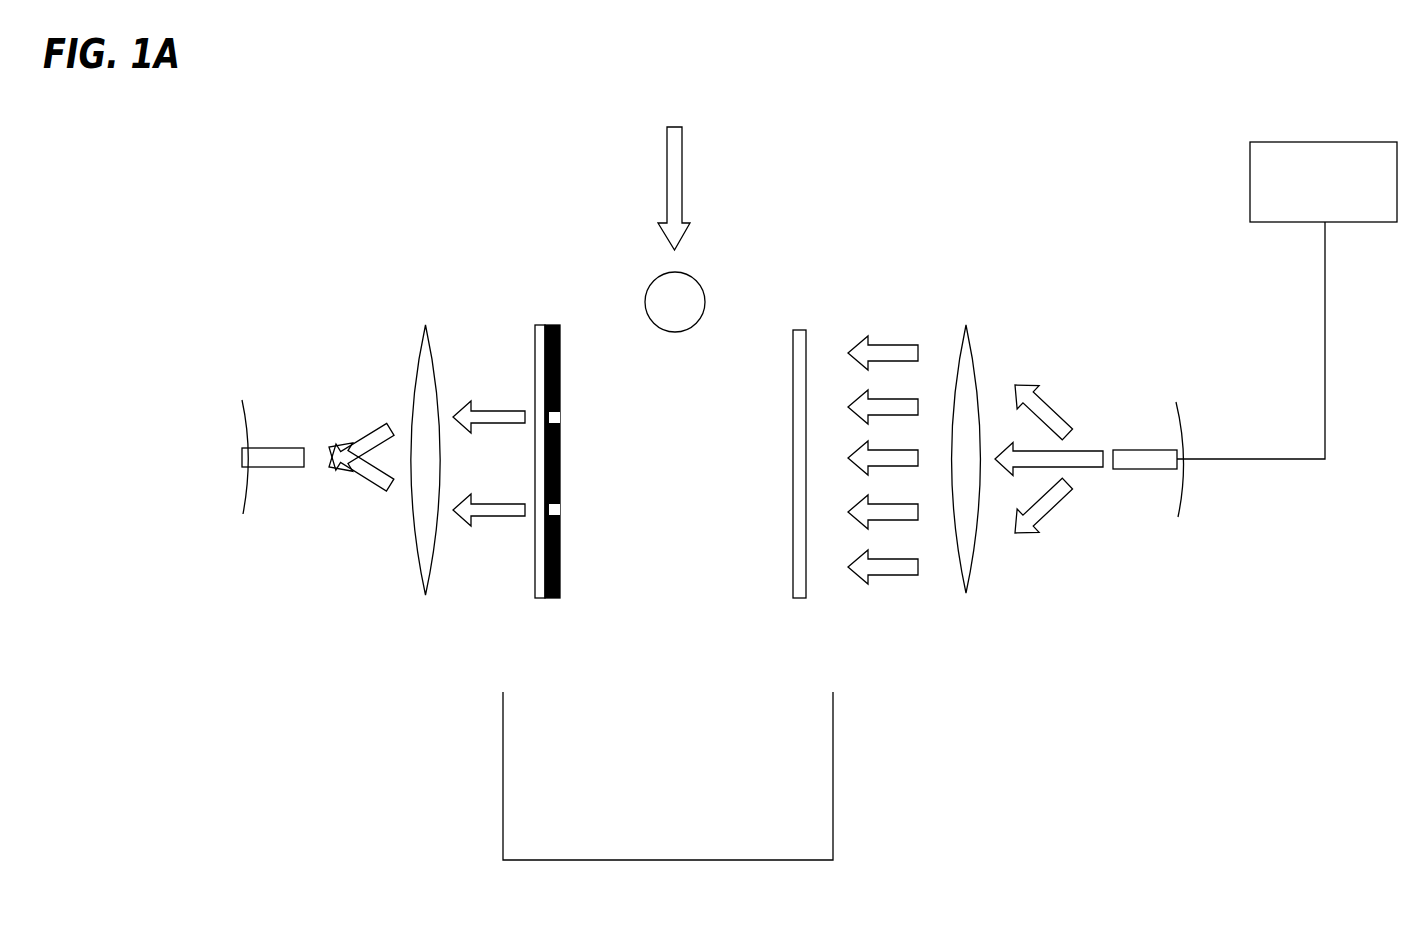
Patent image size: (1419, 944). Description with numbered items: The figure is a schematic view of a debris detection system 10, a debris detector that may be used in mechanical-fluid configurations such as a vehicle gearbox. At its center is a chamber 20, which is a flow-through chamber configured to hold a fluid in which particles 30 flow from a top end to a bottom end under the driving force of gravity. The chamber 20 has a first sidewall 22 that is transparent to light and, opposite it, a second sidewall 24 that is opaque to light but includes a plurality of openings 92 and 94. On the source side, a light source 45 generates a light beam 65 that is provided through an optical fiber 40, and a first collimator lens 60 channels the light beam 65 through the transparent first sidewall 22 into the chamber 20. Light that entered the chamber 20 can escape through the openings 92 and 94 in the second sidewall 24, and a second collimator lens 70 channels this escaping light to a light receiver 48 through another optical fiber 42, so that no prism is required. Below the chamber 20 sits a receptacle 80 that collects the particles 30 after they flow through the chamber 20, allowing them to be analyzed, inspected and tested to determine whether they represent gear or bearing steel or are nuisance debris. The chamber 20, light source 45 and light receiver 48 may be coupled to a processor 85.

The debris detection system 10 is at (205, 212).
The chamber 20 is at (695, 452).
The first sidewall 22 is at (810, 345).
The second sidewall 24 is at (537, 337).
The particles 30 is at (697, 287).
The optical fiber 40 is at (1138, 477).
The optical fiber 42 is at (281, 477).
The light source 45 is at (1185, 437).
The light receiver 48 is at (244, 433).
The first collimator lens 60 is at (982, 592).
The light beam 65 is at (1090, 443).
The second collimator lens 70 is at (411, 556).
The receptacle 80 is at (833, 775).
The processor 85 is at (1247, 177).
The opening 92 is at (567, 405).
The opening 94 is at (567, 507).